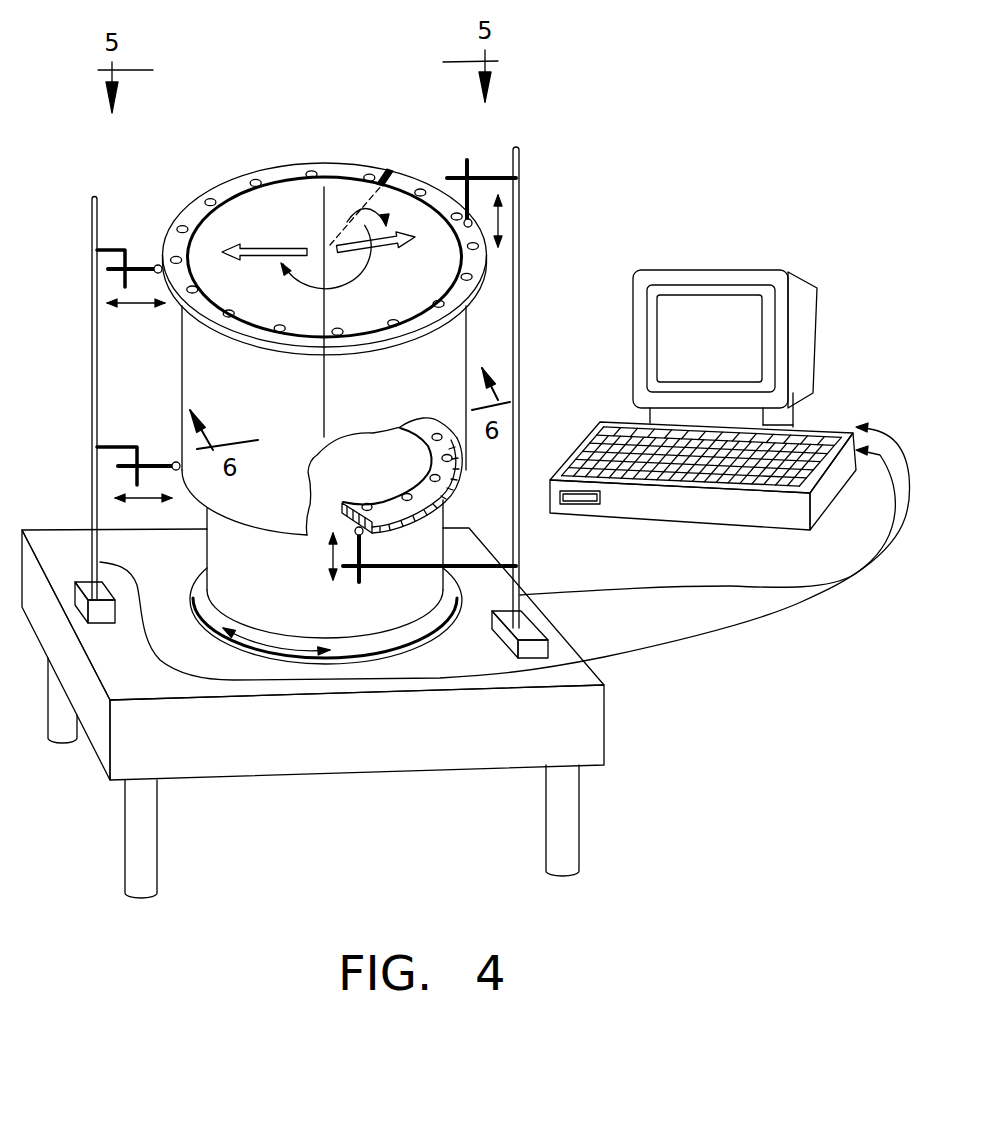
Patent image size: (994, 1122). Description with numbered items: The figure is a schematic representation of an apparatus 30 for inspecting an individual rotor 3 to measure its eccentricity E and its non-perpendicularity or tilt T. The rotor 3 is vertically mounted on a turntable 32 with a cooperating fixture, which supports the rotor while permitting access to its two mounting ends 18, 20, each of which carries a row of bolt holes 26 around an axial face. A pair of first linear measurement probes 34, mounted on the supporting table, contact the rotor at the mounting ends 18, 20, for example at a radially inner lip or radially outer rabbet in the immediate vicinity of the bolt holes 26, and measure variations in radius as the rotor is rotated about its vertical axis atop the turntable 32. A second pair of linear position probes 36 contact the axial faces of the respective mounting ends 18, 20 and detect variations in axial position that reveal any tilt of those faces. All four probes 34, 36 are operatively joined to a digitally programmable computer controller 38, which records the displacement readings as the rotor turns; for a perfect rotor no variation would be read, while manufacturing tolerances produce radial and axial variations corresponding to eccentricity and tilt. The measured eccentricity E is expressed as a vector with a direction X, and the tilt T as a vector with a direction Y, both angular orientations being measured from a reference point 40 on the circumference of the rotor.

The rotor 3 is at (249, 398).
The mounting end 18 is at (421, 488).
The mounting end 20 is at (325, 320).
The bolt holes 26 is at (417, 186).
The apparatus 30 is at (723, 353).
The turntable 32 is at (290, 606).
The first linear measurement probes 34 is at (156, 265).
The second linear position probes 36 is at (477, 192).
The computer controller 38 is at (818, 345).
The reference point 40 is at (385, 170).